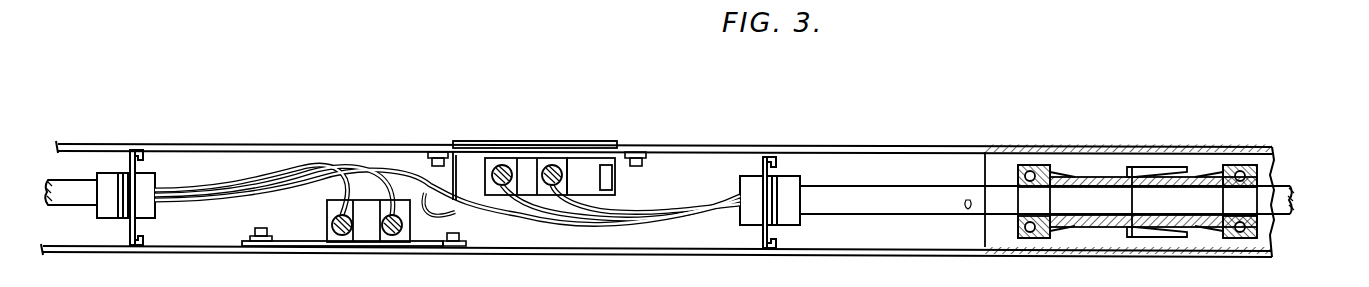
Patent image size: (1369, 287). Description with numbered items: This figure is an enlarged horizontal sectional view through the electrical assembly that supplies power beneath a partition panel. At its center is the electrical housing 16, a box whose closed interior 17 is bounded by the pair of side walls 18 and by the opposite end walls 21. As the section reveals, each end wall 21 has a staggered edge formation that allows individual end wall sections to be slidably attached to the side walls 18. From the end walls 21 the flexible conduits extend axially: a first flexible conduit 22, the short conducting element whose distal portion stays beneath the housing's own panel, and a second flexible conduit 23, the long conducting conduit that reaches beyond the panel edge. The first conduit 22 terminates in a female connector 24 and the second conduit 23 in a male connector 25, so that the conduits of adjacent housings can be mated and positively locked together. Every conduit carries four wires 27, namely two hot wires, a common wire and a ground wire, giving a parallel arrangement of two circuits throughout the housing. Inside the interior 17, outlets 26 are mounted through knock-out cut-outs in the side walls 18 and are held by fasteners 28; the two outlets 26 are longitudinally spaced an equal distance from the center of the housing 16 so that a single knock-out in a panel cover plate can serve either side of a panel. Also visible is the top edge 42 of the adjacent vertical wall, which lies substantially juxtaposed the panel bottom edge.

The electrical housing 16 is at (703, 165).
The closed interior 17 is at (214, 178).
The side wall 18 is at (676, 214).
The end wall 21 is at (130, 228).
The first flexible conduit 22 is at (1057, 198).
The second flexible conduit 23 is at (72, 195).
The female connector 24 is at (1092, 177).
The male connector 25 is at (1218, 172).
The outlet 26 is at (377, 218).
The wires 27 is at (255, 188).
The fasteners 28 is at (256, 233).
The top edge 42 is at (1015, 219).